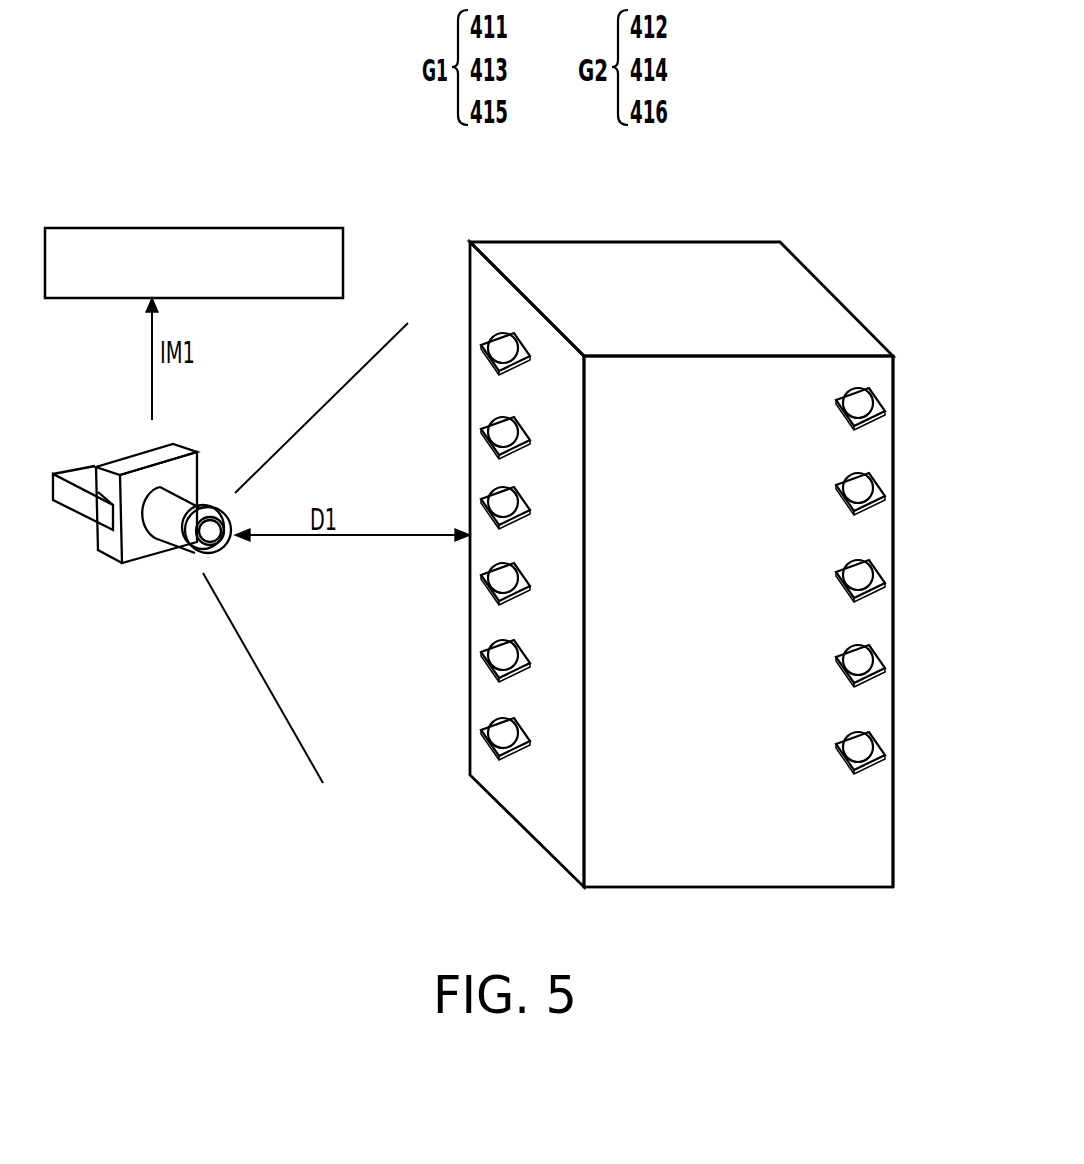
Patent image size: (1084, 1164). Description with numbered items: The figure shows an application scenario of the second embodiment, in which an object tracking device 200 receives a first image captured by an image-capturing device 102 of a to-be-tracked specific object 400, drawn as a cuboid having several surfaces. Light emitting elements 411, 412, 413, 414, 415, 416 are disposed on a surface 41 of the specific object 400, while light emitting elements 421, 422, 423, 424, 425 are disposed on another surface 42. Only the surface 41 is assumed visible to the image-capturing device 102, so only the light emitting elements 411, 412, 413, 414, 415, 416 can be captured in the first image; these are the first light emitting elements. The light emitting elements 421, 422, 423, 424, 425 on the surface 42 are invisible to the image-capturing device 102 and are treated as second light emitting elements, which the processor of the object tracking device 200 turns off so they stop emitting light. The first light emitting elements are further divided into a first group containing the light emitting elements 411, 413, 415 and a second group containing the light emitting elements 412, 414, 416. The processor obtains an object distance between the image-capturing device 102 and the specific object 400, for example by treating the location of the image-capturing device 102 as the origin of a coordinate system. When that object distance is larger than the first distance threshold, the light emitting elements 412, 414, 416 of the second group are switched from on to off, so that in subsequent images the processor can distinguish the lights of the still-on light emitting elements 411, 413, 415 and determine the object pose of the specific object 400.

The object tracking device 200 is at (253, 228).
The image-capturing device 102 is at (183, 442).
The specific object 400 is at (776, 178).
The surface 41 is at (487, 293).
The surface 42 is at (875, 827).
The light emitting element 411 is at (513, 367).
The light emitting element 412 is at (513, 451).
The light emitting element 413 is at (513, 521).
The light emitting element 414 is at (513, 597).
The light emitting element 415 is at (513, 674).
The light emitting element 416 is at (513, 752).
The light emitting element 421 is at (843, 407).
The light emitting element 422 is at (843, 492).
The light emitting element 423 is at (843, 579).
The light emitting element 424 is at (843, 664).
The light emitting element 425 is at (843, 751).